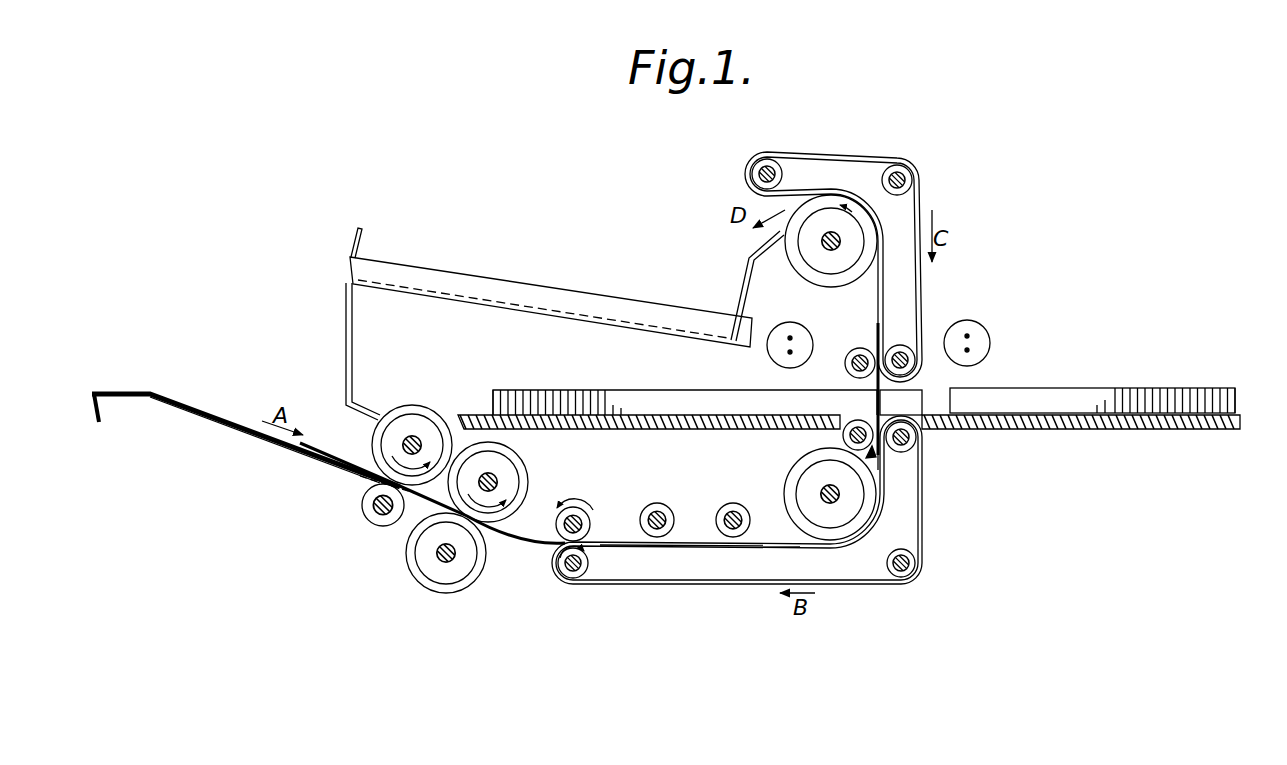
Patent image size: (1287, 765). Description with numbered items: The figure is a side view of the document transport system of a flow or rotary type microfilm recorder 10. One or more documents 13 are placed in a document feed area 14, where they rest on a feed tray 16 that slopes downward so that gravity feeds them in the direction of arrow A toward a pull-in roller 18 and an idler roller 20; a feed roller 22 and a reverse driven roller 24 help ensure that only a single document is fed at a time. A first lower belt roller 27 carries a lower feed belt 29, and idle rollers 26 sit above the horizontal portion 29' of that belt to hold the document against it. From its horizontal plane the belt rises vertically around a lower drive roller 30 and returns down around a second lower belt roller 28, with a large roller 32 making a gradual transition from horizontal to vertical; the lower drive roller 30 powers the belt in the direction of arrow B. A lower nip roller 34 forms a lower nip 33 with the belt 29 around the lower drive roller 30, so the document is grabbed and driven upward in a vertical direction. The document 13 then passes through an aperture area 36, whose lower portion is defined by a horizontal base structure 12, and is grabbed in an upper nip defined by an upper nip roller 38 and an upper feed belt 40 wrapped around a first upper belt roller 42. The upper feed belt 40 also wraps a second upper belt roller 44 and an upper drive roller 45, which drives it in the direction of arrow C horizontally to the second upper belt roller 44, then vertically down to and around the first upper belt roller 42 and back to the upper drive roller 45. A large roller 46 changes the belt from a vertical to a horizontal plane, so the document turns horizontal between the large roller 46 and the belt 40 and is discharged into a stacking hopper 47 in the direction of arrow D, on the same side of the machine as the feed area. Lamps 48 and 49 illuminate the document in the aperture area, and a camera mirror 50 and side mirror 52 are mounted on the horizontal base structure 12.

The microfilm recorder 10 is at (1047, 175).
The horizontal base structure 12 is at (1233, 430).
The document 13 is at (327, 447).
The document feed area 14 is at (205, 390).
The feed tray 16 is at (273, 449).
The pull-in roller 18 is at (377, 438).
The idler roller 20 is at (366, 512).
The feed roller 22 is at (528, 477).
The reverse driven roller 24 is at (455, 592).
The idle rollers 26 is at (589, 516).
The first lower belt roller 27 is at (571, 580).
The second lower belt roller 28 is at (917, 567).
The lower feed belt 29 is at (737, 518).
The horizontal portion of lower feed belt 29' is at (700, 509).
The lower drive roller 30 is at (918, 444).
The large roller 32 is at (797, 470).
The lower nip 33 is at (881, 465).
The lower nip roller 34 is at (842, 436).
The aperture area 36 is at (912, 402).
The upper nip roller 38 is at (857, 350).
The upper feed belt 40 is at (923, 282).
The first upper belt roller 42 is at (908, 348).
The second upper belt roller 44 is at (906, 168).
The upper drive roller 45 is at (771, 160).
The large roller 46 is at (803, 262).
The stacking hopper 47 is at (544, 302).
The lamp 48 is at (984, 343).
The lamp 49 is at (770, 355).
The camera mirror 50 is at (543, 391).
The side mirror 52 is at (1197, 392).